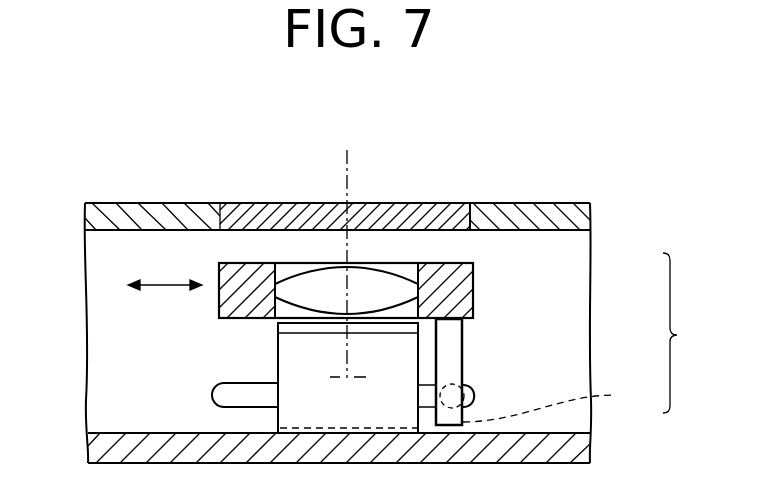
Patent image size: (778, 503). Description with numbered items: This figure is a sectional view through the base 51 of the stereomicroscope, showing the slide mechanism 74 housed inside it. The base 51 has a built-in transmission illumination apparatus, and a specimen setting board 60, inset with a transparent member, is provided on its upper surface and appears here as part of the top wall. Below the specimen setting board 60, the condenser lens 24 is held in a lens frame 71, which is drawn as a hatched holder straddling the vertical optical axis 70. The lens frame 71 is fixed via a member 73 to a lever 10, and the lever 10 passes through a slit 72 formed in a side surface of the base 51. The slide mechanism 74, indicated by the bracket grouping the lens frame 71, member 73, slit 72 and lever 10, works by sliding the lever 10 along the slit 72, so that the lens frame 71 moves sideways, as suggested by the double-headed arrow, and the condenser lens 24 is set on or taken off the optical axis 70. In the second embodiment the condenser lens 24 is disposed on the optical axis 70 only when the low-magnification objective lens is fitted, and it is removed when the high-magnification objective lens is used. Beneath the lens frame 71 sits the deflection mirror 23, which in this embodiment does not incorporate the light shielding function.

The lever 10 is at (468, 405).
The deflection mirror 23 is at (278, 356).
The condenser lens 24 is at (372, 282).
The base 51 is at (535, 212).
The specimen setting board 60 is at (447, 207).
The optical axis 70 is at (346, 170).
The lens frame 71 is at (463, 282).
The slit 72 is at (476, 396).
The member 73 is at (452, 343).
The slide mechanism 74 is at (472, 340).